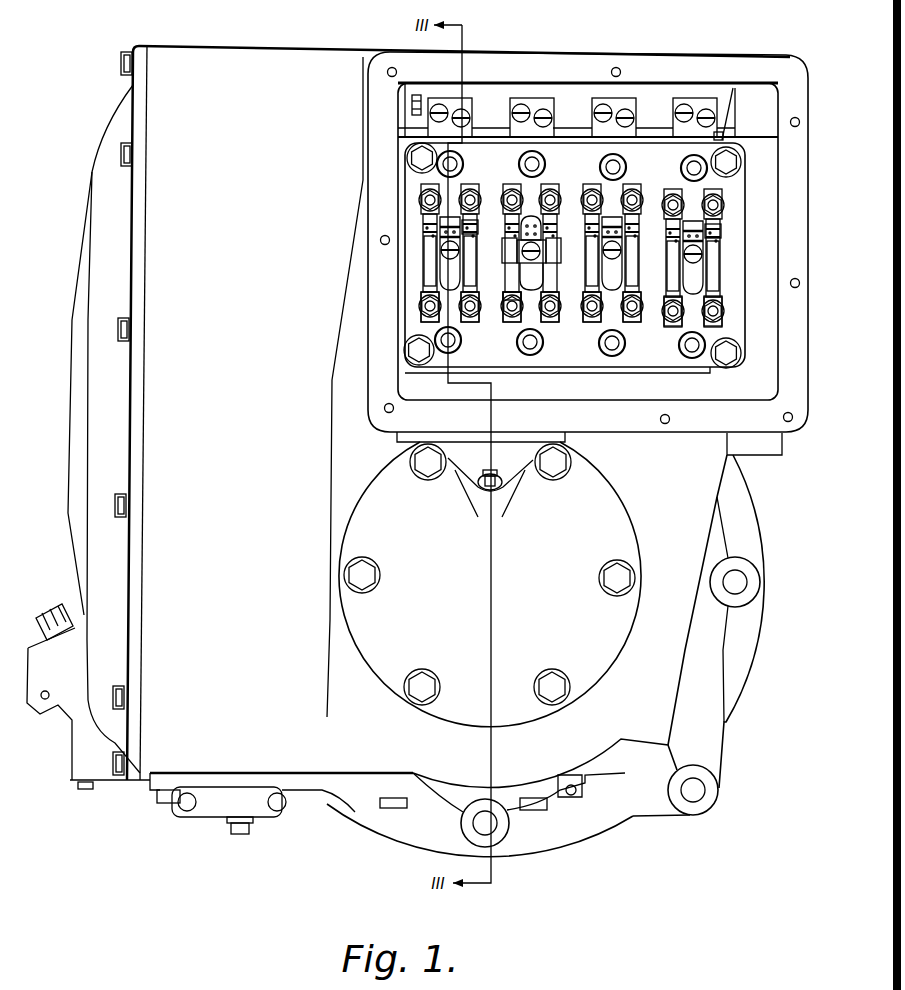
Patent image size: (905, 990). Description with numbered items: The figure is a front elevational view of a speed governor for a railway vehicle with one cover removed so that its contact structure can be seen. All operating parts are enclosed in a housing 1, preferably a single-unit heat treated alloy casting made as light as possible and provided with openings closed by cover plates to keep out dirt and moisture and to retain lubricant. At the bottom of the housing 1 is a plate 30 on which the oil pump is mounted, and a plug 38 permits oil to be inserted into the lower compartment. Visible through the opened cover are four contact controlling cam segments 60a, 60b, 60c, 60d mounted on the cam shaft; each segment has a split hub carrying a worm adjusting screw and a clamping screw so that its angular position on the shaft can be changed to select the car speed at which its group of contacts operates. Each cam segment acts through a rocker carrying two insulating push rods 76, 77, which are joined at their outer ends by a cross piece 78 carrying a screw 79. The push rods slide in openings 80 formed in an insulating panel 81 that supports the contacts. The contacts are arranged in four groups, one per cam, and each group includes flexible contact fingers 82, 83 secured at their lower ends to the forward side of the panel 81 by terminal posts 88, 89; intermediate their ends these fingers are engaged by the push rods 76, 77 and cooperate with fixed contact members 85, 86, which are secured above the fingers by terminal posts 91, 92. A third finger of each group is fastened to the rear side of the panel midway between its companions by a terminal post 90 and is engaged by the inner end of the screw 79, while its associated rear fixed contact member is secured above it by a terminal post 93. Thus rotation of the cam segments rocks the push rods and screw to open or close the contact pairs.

The housing 1 is at (333, 57).
The plate 30 is at (312, 787).
The plug 38 is at (43, 612).
The contact controlling cam segment 60a is at (452, 102).
The contact controlling cam segment 60b is at (530, 102).
The contact controlling cam segment 60c is at (622, 102).
The contact controlling cam segment 60d is at (700, 102).
The insulating push rod 76 is at (503, 263).
The insulating push rod 77 is at (558, 251).
The cross piece 78 is at (531, 276).
The screw 79 is at (504, 306).
The openings 80 is at (542, 231).
The insulating panel 81 is at (580, 360).
The flexible contact finger 82 is at (425, 271).
The flexible contact finger 83 is at (470, 258).
The fixed contact member 85 is at (425, 217).
The fixed contact member 86 is at (474, 220).
The terminal post 88 is at (420, 307).
The terminal post 89 is at (460, 318).
The terminal post 90 is at (520, 346).
The terminal post 91 is at (418, 199).
The terminal post 92 is at (470, 192).
The terminal post 93 is at (523, 158).